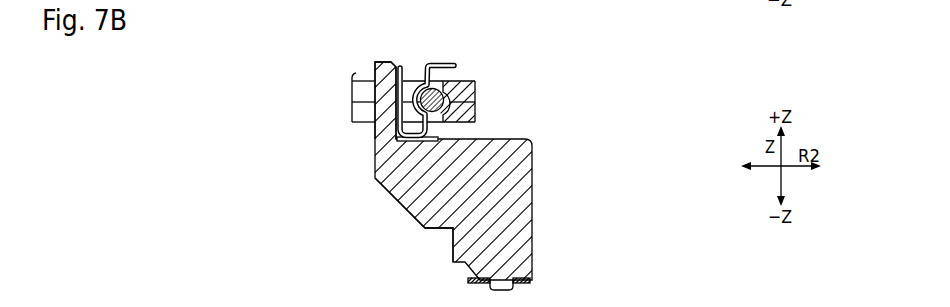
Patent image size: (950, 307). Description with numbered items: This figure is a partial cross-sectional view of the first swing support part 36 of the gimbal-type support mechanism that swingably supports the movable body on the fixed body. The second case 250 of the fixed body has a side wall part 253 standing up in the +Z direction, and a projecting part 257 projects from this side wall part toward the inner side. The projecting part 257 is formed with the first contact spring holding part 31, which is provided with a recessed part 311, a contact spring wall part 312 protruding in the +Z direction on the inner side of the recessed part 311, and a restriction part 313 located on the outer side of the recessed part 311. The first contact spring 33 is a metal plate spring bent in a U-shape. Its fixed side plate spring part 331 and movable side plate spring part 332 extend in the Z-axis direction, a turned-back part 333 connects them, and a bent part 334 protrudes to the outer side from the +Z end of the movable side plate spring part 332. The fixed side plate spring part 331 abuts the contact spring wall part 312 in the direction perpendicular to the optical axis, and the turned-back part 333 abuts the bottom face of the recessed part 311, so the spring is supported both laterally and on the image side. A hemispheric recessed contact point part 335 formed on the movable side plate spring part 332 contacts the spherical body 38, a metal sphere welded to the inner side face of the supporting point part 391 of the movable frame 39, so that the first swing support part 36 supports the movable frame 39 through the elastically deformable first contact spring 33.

The first swing support part 36 is at (260, 107).
The first contact spring 33 is at (453, 155).
The first contact spring holding part 31 is at (370, 137).
The recessed part 311 is at (380, 62).
The contact spring wall part 312 is at (500, 147).
The restriction part 313 is at (444, 138).
The spherical body 38 is at (437, 114).
The fixed side plate spring part 331 is at (437, 114).
The movable side plate spring part 332 is at (437, 114).
The turned-back part 333 is at (416, 114).
The bent part 334 is at (449, 62).
The contact point part 335 is at (421, 89).
The supporting point part 391 is at (477, 94).
The movable frame 39 is at (502, 95).
The side wall part 253 is at (528, 233).
The second case 250 is at (564, 260).
The projecting part 257 is at (404, 206).